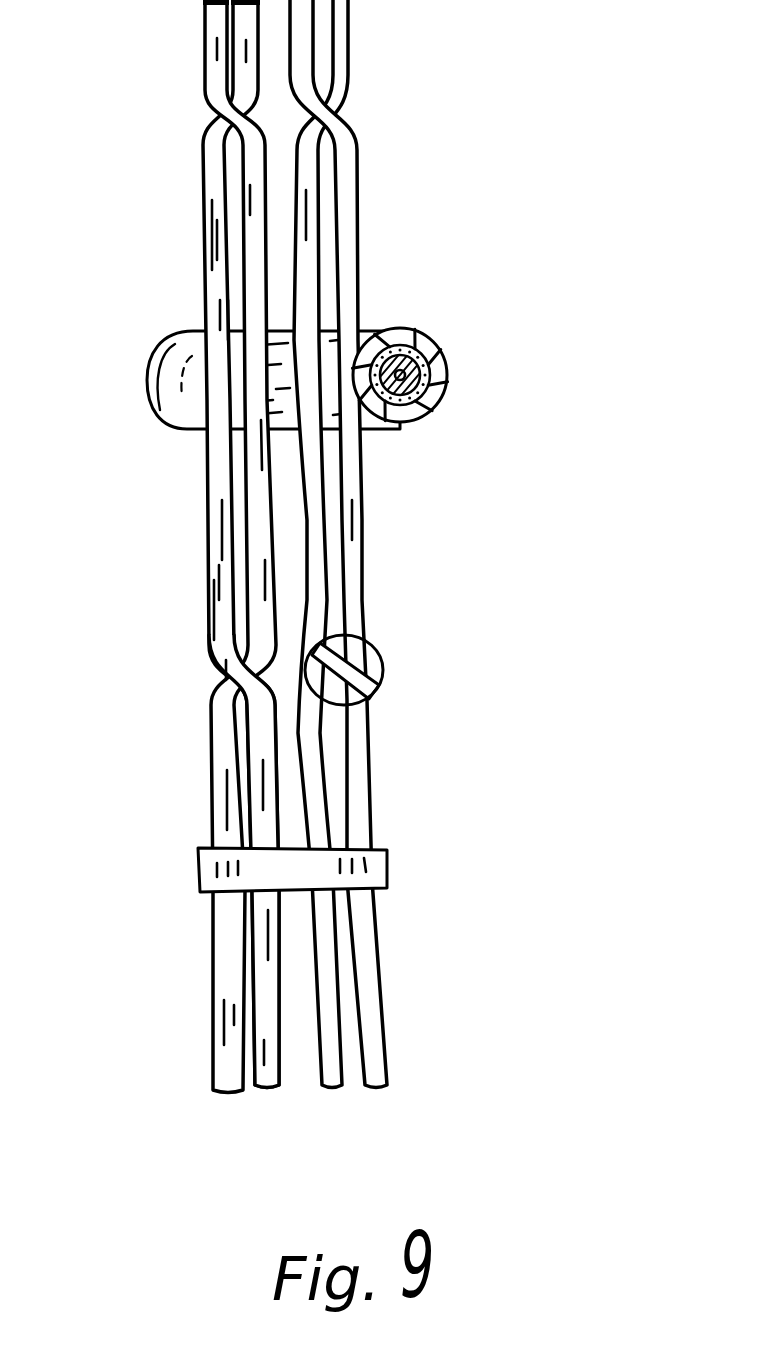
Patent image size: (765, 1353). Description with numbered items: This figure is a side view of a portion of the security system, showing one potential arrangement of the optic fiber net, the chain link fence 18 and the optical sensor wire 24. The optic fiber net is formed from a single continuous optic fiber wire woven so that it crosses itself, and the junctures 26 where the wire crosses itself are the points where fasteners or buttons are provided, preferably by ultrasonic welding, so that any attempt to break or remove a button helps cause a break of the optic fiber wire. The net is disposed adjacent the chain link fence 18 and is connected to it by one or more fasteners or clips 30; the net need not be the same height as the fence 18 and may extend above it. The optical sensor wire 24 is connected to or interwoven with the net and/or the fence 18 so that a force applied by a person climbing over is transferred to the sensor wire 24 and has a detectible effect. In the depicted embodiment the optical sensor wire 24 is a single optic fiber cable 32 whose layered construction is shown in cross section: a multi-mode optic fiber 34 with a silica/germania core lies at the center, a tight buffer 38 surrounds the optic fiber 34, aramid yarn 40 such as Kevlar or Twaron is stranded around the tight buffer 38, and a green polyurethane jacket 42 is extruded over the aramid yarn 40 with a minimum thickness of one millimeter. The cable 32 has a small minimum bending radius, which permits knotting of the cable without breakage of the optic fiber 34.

The chain link fence 18 is at (192, 1028).
The optical sensor wire 24 is at (381, 436).
The juncture 26 is at (387, 672).
The fastener 30 is at (388, 865).
The optic fiber cable 32 is at (424, 318).
The optic fiber 34 is at (423, 337).
The tight buffer 38 is at (437, 353).
The aramid yarn 40 is at (443, 372).
The green polyurethane jacket 42 is at (449, 382).